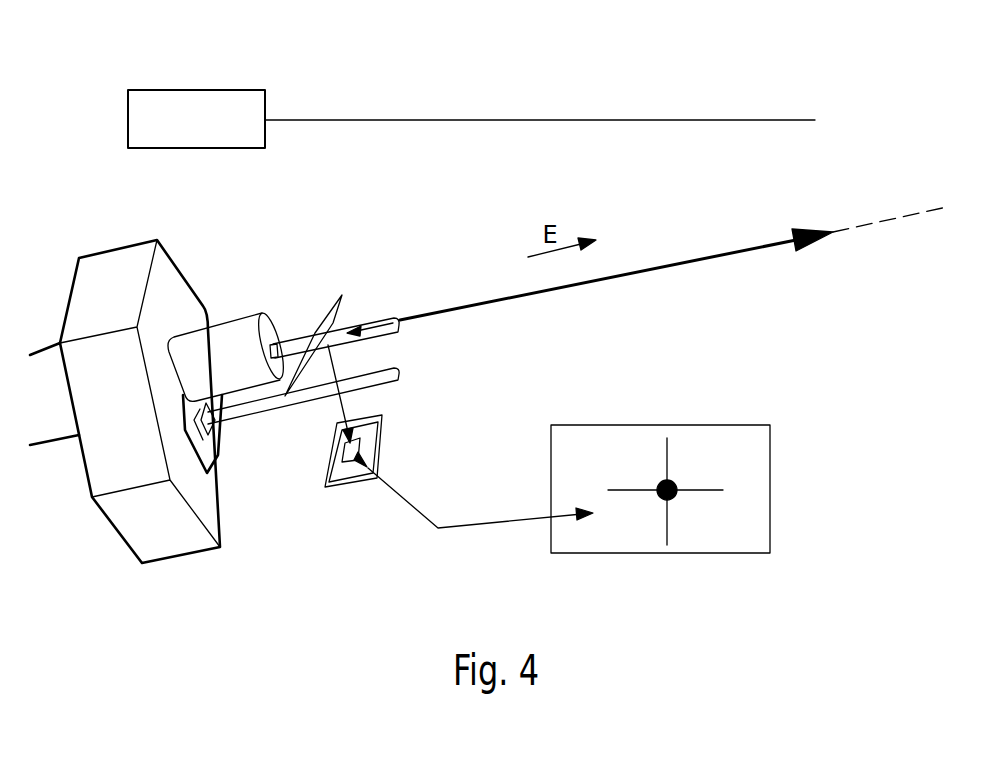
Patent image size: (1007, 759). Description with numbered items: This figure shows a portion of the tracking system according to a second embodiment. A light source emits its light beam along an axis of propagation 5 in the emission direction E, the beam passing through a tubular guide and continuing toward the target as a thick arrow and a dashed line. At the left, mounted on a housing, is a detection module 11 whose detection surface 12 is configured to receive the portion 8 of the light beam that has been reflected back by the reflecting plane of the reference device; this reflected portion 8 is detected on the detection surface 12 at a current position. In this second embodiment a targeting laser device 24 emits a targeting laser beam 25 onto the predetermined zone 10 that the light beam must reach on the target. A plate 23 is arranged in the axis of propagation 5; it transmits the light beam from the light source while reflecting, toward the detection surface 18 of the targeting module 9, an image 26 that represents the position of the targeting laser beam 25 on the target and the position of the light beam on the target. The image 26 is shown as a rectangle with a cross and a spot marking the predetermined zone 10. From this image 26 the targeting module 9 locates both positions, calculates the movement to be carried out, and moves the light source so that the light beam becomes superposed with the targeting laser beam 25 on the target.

The axis of propagation 5 is at (880, 220).
The portion of the light beam 8 is at (272, 407).
The targeting module 9 is at (518, 581).
The predetermined zone 10 is at (672, 498).
The detection module 11 is at (216, 446).
The detection surface 12 is at (227, 420).
The detection surface 18 is at (355, 437).
The plate 23 is at (345, 293).
The targeting laser device 24 is at (177, 107).
The targeting laser beam 25 is at (552, 118).
The image 26 is at (609, 565).